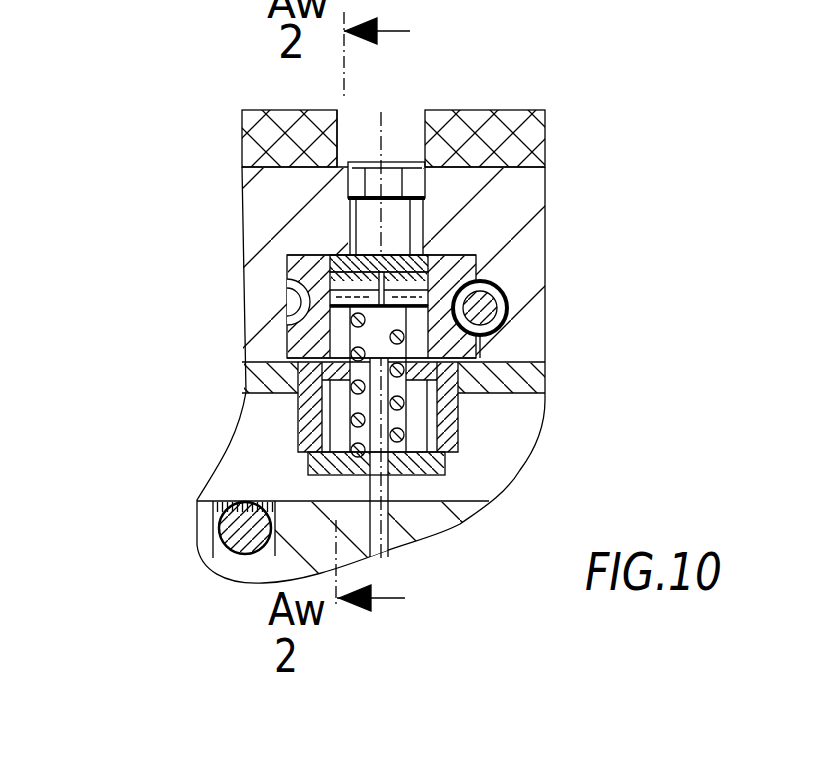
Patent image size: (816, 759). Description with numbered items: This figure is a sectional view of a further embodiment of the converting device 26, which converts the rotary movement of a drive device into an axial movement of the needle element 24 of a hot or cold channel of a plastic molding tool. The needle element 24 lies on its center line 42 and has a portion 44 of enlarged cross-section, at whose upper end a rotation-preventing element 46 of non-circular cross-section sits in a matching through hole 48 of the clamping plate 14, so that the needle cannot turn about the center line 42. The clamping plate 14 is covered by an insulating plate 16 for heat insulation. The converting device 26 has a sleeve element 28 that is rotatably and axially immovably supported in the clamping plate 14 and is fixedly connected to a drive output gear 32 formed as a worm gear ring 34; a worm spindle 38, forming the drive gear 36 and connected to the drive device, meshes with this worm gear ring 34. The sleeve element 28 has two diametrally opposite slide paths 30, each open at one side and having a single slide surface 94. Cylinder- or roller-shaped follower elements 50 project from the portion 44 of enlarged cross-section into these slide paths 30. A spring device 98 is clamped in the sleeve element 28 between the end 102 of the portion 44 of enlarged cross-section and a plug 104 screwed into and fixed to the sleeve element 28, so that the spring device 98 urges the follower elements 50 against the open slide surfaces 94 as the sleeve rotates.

The clamping plate 14 is at (256, 213).
The insulating plate 16 is at (260, 128).
The needle element 24 is at (383, 532).
The converting device 26 is at (508, 276).
The sleeve element 28 is at (455, 252).
The slide paths 30 is at (334, 332).
The drive output gear 32 is at (332, 273).
The worm gear ring 34 is at (286, 312).
The drive gear 36 is at (574, 304).
The worm spindle 38 is at (507, 300).
The center line 42 is at (387, 113).
The portion of enlarged cross-section 44 is at (432, 272).
The rotation-preventing element 46 is at (405, 182).
The through hole 48 is at (353, 127).
The follower elements 50 is at (286, 290).
The slide surface 94 is at (338, 250).
The spring device 98 is at (457, 418).
The end of the portion of enlarged cross-section 102 is at (505, 318).
The plug 104 is at (450, 467).